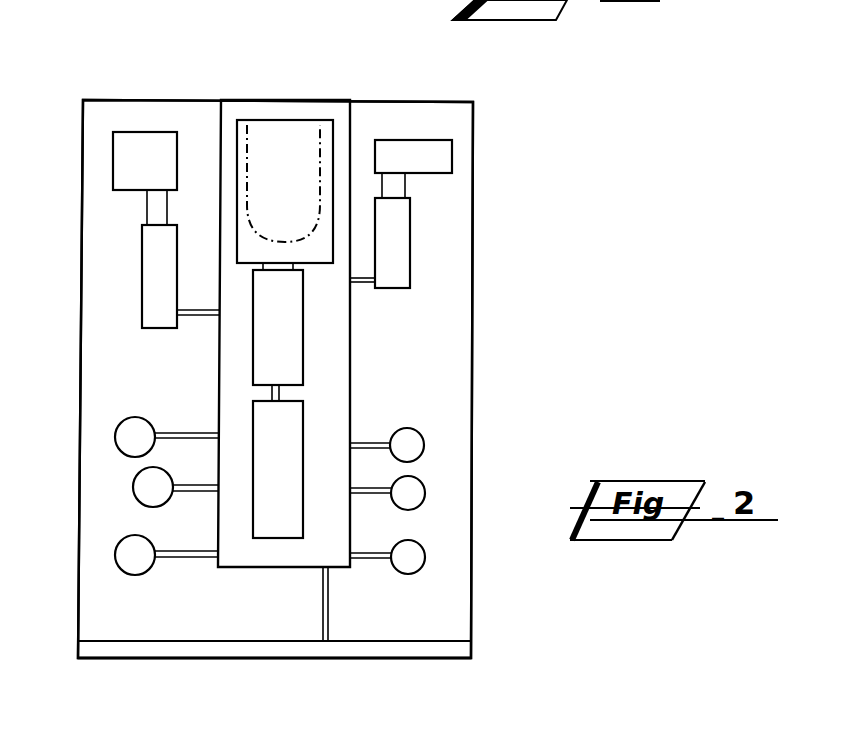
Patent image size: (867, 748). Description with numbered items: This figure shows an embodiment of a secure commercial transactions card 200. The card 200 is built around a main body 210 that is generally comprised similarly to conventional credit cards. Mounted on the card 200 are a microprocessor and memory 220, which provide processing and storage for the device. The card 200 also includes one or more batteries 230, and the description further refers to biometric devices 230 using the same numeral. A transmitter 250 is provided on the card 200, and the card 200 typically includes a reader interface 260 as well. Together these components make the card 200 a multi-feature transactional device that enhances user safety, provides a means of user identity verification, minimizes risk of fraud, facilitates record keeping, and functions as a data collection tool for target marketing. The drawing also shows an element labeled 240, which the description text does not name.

The secure commercial transactions card 200 is at (545, 71).
The main body 210 is at (473, 215).
The microprocessor and memory 220 is at (418, 140).
The batteries 230 is at (425, 448).
The display 240 is at (290, 118).
The transmitter 250 is at (150, 132).
The reader interface 260 is at (133, 660).